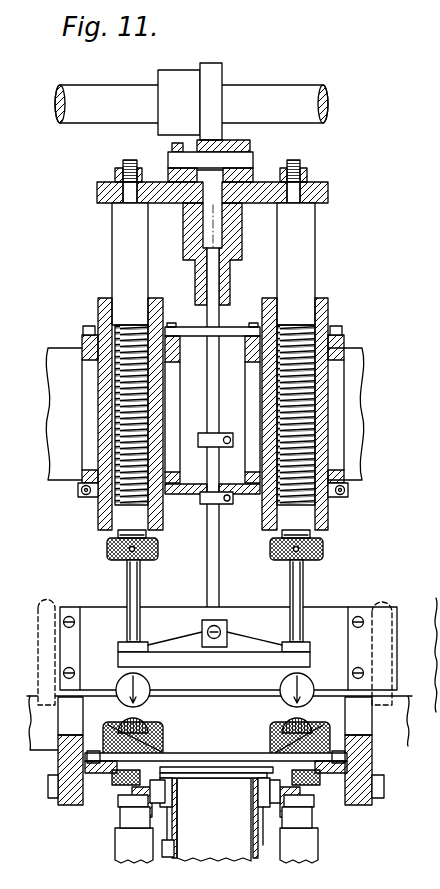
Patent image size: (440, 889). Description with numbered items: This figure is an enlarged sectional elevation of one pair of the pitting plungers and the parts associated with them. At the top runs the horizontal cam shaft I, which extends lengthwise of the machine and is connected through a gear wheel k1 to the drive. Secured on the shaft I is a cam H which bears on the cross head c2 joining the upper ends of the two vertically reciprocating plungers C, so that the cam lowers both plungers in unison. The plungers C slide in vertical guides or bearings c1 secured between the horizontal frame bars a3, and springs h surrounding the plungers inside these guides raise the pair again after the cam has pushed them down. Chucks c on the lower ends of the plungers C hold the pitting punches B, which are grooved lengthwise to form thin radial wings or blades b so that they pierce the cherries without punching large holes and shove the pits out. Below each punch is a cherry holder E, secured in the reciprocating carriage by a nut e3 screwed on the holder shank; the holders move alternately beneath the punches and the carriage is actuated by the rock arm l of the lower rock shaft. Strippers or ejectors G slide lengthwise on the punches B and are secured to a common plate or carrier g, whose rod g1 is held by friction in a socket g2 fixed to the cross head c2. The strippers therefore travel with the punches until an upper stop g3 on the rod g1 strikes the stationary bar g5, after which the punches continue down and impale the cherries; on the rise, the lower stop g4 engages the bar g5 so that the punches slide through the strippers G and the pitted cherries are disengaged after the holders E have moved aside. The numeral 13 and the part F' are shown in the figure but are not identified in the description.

The cam shaft I is at (191, 104).
The cam H is at (213, 84).
The gear wheel k1 is at (223, 142).
The cross head c2 is at (268, 182).
The plungers C is at (213, 264).
The socket g2 is at (230, 267).
The spindle bore 13 is at (235, 318).
The rod g1 is at (219, 572).
The horizontal beams or bars a3 is at (63, 355).
The springs h is at (115, 400).
The vertical guides or bearings c1 is at (263, 380).
The upper stop or collar g3 is at (228, 432).
The bar g5 is at (192, 495).
The lower stop or collar g4 is at (222, 505).
The chucks c is at (107, 548).
The cherry holders E is at (283, 722).
The pitting punches B is at (127, 585).
The radial wings or blades b is at (140, 588).
The strippers or ejectors G is at (140, 662).
The plate or carrier g is at (247, 650).
The nut e3 is at (115, 792).
The post F' is at (215, 811).
The rock arm l is at (167, 857).